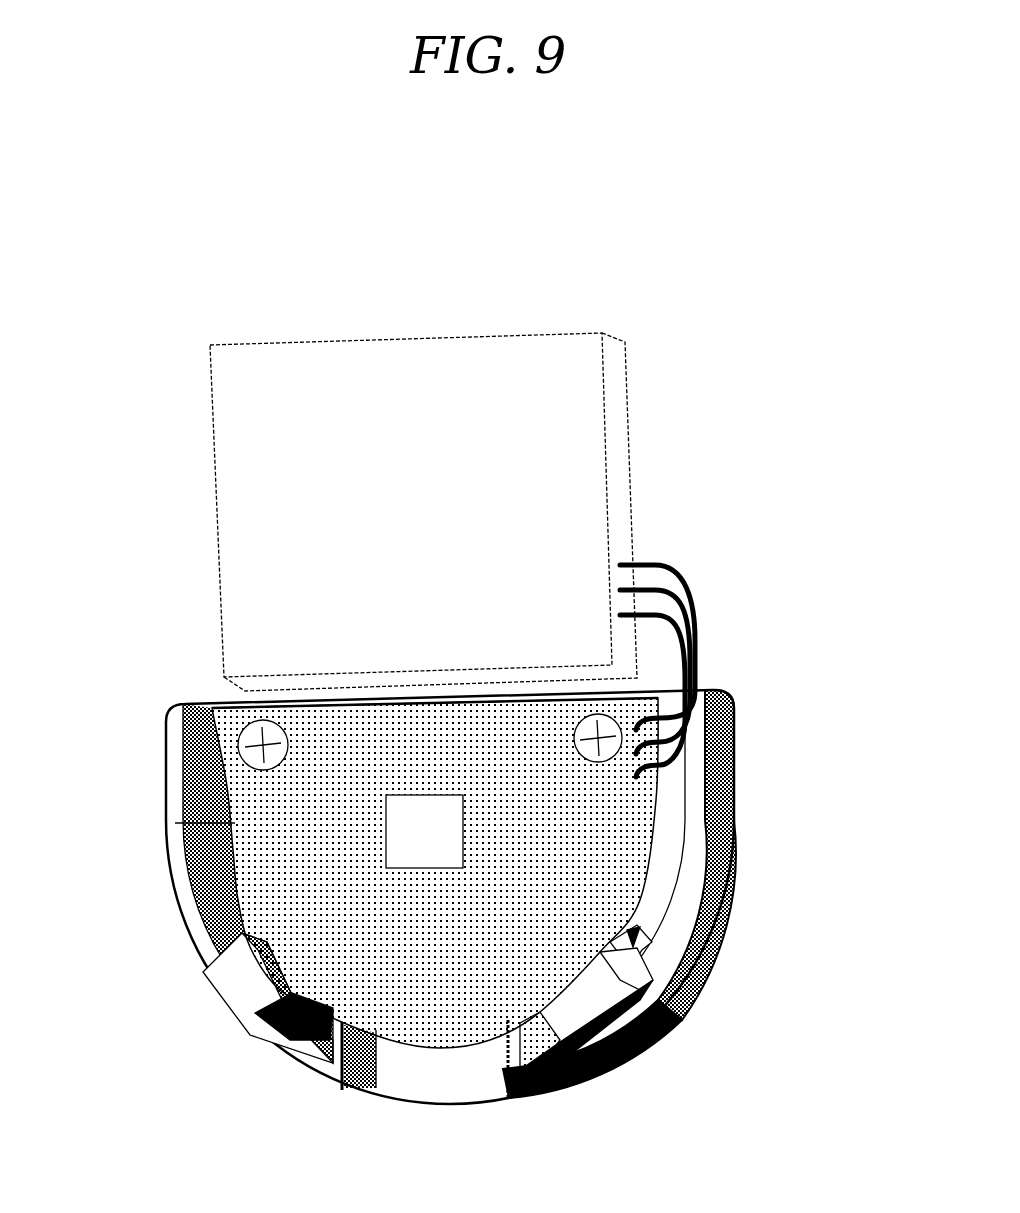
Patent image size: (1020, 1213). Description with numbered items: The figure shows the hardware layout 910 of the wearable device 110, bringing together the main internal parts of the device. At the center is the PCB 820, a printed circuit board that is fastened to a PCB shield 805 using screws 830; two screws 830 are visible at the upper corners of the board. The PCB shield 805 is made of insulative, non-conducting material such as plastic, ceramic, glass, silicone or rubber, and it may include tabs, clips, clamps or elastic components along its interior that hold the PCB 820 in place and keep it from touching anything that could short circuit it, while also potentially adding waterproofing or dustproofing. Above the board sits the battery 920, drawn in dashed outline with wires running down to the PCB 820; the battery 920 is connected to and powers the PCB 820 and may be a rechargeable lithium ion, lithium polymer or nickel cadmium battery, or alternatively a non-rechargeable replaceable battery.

The battery 920 is at (281, 519).
The screws 830 is at (248, 755).
The PCB 820 is at (244, 806).
The PCB shield 805 is at (424, 1072).
The hardware layout 910 is at (759, 1120).
The wearable device 110 is at (469, 740).